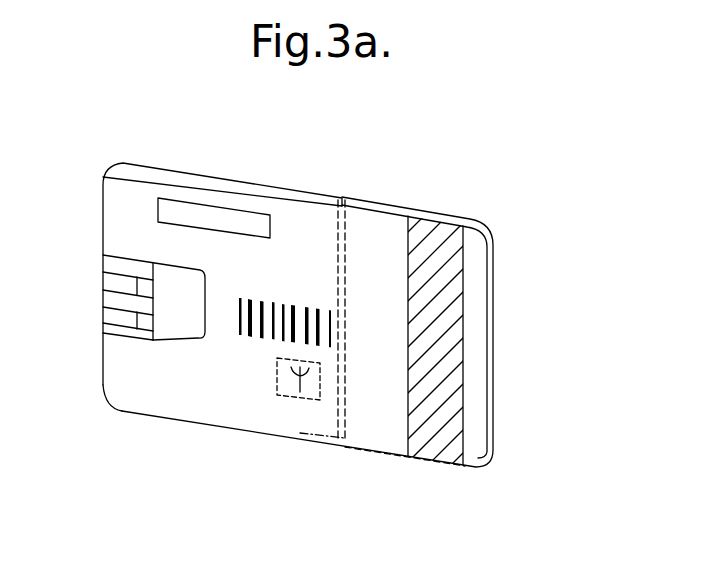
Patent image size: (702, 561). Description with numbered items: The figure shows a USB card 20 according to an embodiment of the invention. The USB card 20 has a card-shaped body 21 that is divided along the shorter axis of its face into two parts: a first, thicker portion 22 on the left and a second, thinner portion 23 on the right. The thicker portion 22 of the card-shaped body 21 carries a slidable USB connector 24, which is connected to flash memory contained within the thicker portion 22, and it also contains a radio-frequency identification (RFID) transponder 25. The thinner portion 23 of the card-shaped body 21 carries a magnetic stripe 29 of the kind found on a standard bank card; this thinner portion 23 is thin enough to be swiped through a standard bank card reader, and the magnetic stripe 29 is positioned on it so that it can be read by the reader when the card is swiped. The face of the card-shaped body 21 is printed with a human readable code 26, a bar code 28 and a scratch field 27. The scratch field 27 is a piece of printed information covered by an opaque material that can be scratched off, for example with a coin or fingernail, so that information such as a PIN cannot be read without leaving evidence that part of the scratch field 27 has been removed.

The USB card 20 is at (518, 176).
The card-shaped body 21 is at (300, 207).
The thicker portion 22 is at (137, 232).
The thinner portion 23 is at (473, 358).
The slidable USB connector 24 is at (168, 328).
The radio-frequency identification (RFID) transponder 25 is at (308, 387).
The human readable code 26 is at (188, 408).
The scratch field 27 is at (187, 207).
The bar code 28 is at (293, 303).
The magnetic stripe 29 is at (437, 420).